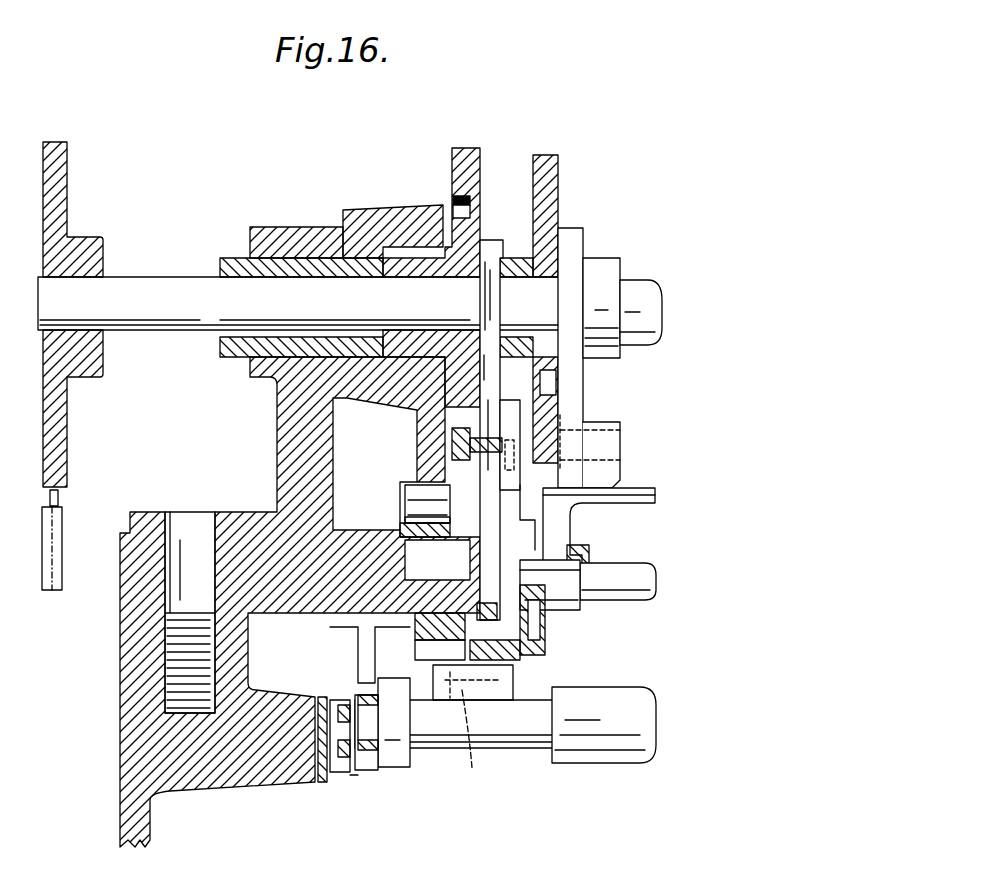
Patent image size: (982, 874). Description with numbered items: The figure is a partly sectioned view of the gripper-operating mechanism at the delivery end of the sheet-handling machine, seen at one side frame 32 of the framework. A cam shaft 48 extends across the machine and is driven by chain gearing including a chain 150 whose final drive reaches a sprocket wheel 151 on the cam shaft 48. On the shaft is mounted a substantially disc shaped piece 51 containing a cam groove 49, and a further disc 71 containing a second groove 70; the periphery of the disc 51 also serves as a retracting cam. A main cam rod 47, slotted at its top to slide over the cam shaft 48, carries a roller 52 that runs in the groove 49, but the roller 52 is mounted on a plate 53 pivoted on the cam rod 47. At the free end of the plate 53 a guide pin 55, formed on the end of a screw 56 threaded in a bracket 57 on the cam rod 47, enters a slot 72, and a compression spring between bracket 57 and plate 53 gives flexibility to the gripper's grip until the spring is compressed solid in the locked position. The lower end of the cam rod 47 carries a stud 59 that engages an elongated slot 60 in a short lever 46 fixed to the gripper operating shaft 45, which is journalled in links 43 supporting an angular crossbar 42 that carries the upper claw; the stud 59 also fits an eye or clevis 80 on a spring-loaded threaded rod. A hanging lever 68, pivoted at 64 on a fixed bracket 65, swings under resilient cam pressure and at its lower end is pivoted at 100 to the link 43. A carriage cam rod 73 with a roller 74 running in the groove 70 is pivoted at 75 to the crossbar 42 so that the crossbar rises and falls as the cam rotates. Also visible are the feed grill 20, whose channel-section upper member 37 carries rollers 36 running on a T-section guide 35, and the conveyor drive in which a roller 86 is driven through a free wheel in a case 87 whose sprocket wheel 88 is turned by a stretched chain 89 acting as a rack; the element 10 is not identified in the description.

The bracket 10 is at (420, 650).
The grill 20 is at (356, 787).
The side frame 32 is at (125, 795).
The guide 35 is at (322, 776).
The roller 36 is at (338, 782).
The upper member of the grill 37 is at (345, 782).
The angular crossbar 42 is at (640, 492).
The link 43 is at (500, 548).
The gripper operating shaft 45 is at (640, 594).
The short lever 46 is at (570, 592).
The main cam rod 47 is at (490, 312).
The cam shaft 48 is at (188, 282).
The cam groove 49 is at (470, 212).
The disc shaped piece 51 is at (455, 162).
The roller 52 is at (452, 435).
The plate 53 is at (508, 405).
The guide pin 55 is at (508, 492).
The screw 56 is at (512, 512).
The bracket 57 is at (520, 500).
The stud 59 is at (510, 655).
The elongated slot 60 is at (533, 610).
The pivot 64 is at (445, 505).
The fixed bracket 65 is at (405, 532).
The lever 68 is at (440, 523).
The groove 70 is at (545, 352).
The disc 71 is at (557, 195).
The slot 72 is at (562, 447).
The carriage cam rod 73 is at (572, 292).
The roller 74 is at (548, 390).
The pivot 75 is at (568, 420).
The eye or clevis 80 is at (495, 698).
The roller 86 is at (607, 748).
The case 87 is at (398, 718).
The sprocket wheel 88 is at (362, 760).
The chain 89 is at (348, 683).
The pivot 100 is at (479, 739).
The chain 150 is at (64, 555).
The sprocket wheel 151 is at (65, 430).